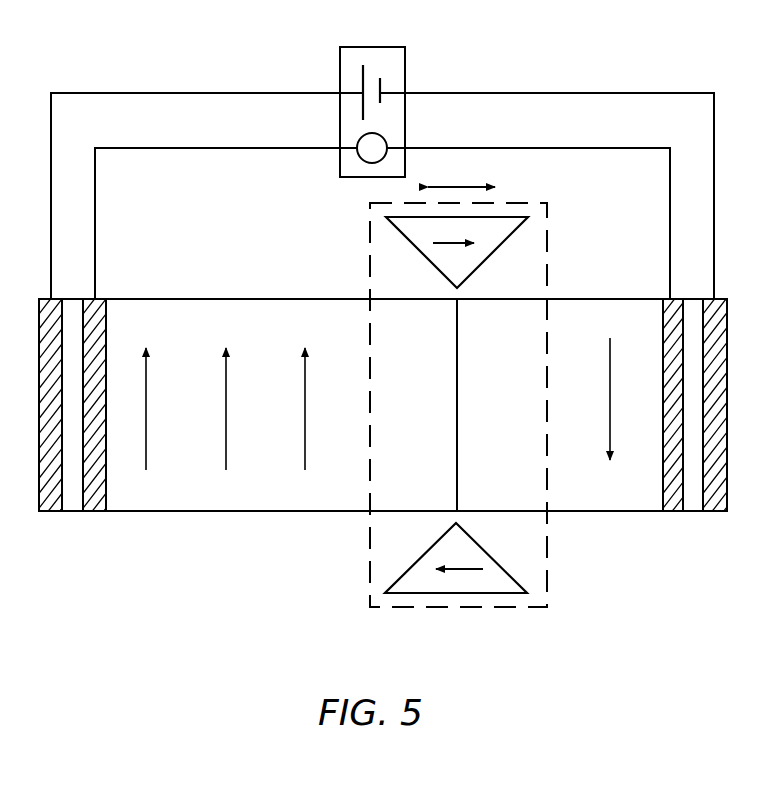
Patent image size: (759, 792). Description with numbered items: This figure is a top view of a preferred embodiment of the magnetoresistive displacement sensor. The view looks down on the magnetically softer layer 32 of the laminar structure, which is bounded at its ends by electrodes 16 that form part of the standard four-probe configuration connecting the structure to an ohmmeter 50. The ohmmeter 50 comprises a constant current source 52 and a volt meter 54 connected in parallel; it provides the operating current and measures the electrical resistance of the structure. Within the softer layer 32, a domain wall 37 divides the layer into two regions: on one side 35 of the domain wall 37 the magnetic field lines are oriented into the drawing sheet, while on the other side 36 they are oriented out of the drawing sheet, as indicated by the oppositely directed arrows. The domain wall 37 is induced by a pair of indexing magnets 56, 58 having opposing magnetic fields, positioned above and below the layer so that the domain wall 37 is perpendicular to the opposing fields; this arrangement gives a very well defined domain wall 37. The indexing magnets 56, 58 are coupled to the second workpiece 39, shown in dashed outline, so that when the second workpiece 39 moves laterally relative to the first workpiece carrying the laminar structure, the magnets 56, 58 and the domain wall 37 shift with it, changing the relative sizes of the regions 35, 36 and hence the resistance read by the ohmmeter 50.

The electrodes 16 is at (673, 512).
The magnetically softer layer 32 is at (654, 327).
The one side of the domain wall 35 is at (428, 381).
The other side of the domain wall 36 is at (515, 381).
The domain wall 37 is at (457, 410).
The second workpiece 39 is at (547, 272).
The ohmmeter 50 is at (405, 63).
The constant current source 52 is at (362, 78).
The volt meter 54 is at (361, 138).
The indexing magnet 56 is at (516, 229).
The indexing magnet 58 is at (503, 570).